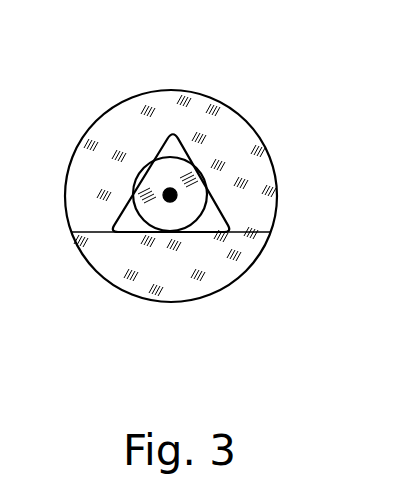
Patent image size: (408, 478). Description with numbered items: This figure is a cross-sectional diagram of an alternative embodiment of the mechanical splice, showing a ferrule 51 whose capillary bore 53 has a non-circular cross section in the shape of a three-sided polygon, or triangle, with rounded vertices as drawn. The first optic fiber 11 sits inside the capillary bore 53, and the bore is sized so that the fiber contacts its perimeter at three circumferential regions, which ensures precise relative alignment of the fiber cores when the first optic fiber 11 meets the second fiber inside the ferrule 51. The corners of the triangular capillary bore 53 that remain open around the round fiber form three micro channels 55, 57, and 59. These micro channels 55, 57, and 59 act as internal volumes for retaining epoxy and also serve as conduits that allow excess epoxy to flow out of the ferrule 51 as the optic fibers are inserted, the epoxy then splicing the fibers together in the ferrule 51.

The first optic fiber 11 is at (168, 223).
The ferrule 51 is at (202, 95).
The capillary bore 53 is at (193, 152).
The micro channel 55 is at (170, 142).
The micro channel 57 is at (210, 220).
The micro channel 59 is at (125, 222).